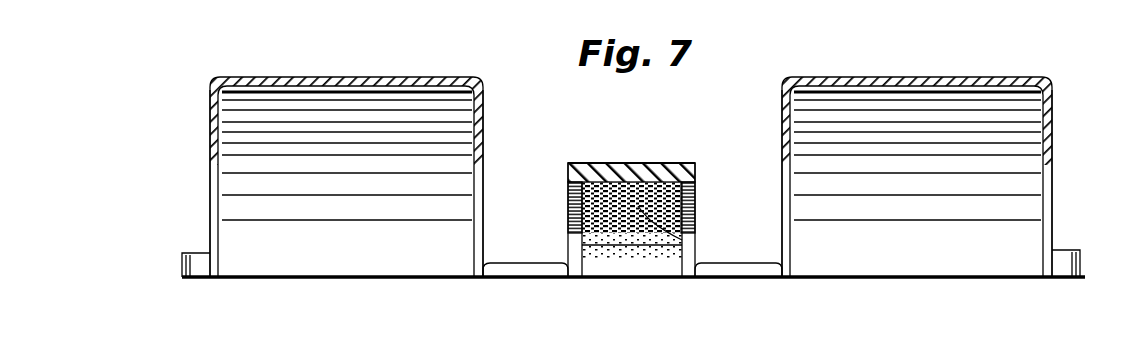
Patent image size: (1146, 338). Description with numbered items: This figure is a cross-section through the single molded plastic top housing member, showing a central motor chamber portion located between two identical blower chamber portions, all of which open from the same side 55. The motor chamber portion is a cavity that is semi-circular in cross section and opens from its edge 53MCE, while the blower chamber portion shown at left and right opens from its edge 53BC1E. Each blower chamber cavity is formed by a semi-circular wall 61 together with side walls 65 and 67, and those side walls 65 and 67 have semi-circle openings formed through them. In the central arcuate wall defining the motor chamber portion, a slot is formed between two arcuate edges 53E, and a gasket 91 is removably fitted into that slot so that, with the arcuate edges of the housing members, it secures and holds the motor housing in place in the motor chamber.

The semi-circular wall 61 is at (355, 77).
The side wall 65 is at (210, 131).
The side wall 67 is at (483, 130).
The arcuate edge 53E is at (566, 172).
The gasket 91 is at (697, 233).
The side 55 is at (599, 297).
The motor chamber edge 53MCE is at (637, 279).
The blower chamber edge 53BC1E is at (342, 280).